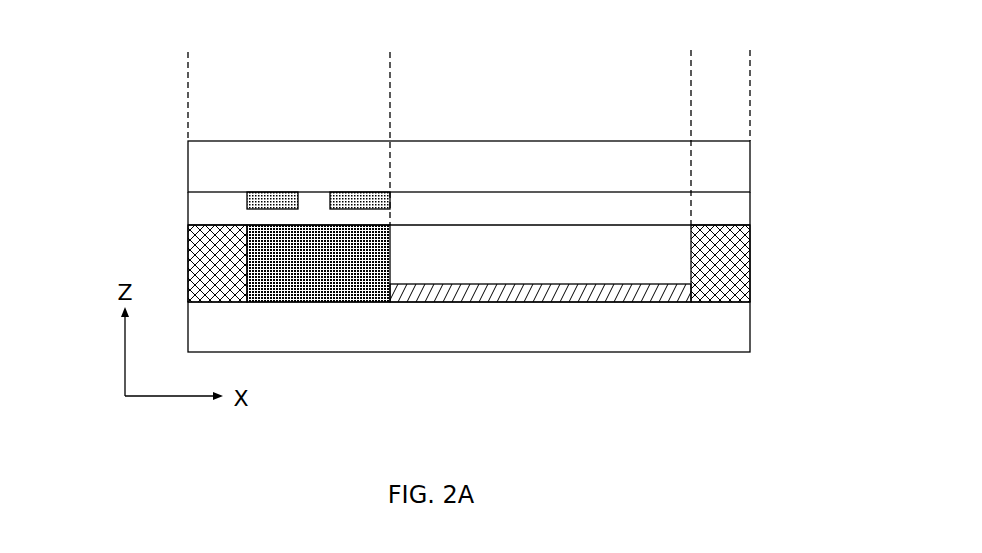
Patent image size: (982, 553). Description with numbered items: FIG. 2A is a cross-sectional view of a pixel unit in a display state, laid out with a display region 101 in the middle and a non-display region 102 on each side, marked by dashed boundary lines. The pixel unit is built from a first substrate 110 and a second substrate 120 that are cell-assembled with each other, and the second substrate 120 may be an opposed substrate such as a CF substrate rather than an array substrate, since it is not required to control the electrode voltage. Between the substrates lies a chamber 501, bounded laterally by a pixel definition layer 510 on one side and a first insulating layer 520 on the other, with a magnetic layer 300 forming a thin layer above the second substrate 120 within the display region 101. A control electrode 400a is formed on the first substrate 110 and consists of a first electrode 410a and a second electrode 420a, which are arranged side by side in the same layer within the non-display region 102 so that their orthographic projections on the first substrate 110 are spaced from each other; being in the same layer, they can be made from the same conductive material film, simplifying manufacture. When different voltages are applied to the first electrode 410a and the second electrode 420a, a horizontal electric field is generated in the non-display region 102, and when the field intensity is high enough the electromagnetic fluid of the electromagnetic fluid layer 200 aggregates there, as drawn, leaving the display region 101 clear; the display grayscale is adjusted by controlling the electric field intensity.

The display region 101 is at (691, 77).
The non-display region 102 is at (390, 65).
The first substrate 110 is at (423, 175).
The second substrate 120 is at (482, 324).
The electromagnetic fluid layer 200 is at (333, 272).
The magnetic layer 300 is at (565, 295).
The control electrode 400a is at (208, 148).
The first electrode 410a is at (362, 198).
The second electrode 420a is at (277, 205).
The chamber 501 is at (513, 238).
The pixel definition layer 510 is at (213, 268).
The first insulating layer 520 is at (740, 213).